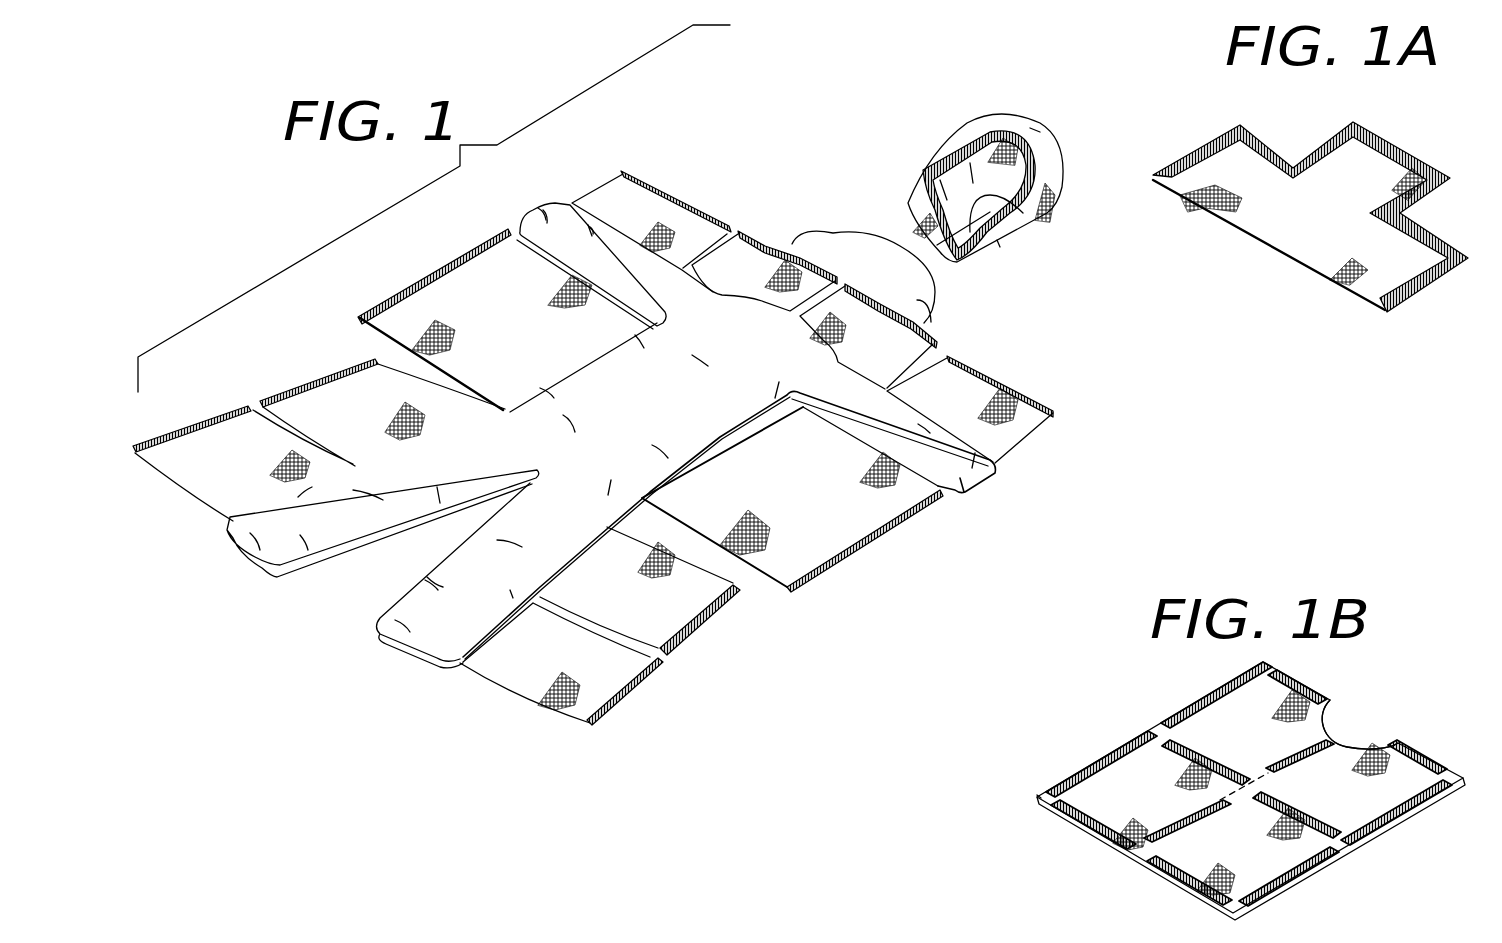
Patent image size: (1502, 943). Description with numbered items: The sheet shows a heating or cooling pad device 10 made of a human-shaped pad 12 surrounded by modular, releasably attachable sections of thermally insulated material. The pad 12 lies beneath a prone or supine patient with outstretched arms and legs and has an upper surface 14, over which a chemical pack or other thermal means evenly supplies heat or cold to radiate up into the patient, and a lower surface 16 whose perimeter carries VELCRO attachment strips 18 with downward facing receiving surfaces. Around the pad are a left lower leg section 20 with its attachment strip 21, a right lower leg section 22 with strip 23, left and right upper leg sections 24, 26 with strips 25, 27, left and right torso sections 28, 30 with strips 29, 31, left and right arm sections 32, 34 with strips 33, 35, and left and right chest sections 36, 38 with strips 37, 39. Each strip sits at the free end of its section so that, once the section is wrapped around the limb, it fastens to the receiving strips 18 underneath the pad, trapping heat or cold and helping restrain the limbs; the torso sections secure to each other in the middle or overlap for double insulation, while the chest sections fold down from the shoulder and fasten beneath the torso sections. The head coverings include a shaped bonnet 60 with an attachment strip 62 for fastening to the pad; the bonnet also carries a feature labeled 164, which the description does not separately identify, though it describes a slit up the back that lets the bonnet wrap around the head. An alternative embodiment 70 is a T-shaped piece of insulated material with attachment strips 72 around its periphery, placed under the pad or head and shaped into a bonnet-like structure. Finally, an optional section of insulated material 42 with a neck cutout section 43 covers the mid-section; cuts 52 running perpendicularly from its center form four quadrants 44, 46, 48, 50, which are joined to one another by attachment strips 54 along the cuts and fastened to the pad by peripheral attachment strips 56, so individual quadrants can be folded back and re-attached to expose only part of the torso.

In FIG. 1, the heating or cooling pad device 10 is at (757, 130).
In FIG. 1, the pad 12 is at (413, 627).
In FIG. 1, the upper surface 14 is at (604, 476).
In FIG. 1, the lower surface 16 is at (268, 582).
In FIG. 1, the attachment strips 18 is at (313, 577).
In FIG. 1, the left lower leg section 20 is at (242, 474).
In FIG. 1, the attachment strip 21 is at (220, 413).
In FIG. 1, the right lower leg section 22 is at (569, 673).
In FIG. 1, the attachment strip 23 is at (643, 683).
In FIG. 1, the left upper leg section 24 is at (374, 429).
In FIG. 1, the attachment strip 25 is at (333, 368).
In FIG. 1, the right upper leg section 26 is at (632, 603).
In FIG. 1, the attachment strip 27 is at (707, 628).
In FIG. 1, the left torso section 28 is at (501, 336).
In FIG. 1, the attachment strip 29 is at (453, 258).
In FIG. 1, the right torso section 30 is at (712, 511).
In FIG. 1, the attachment strip 31 is at (853, 560).
In FIG. 1, the left arm section 32 is at (659, 232).
In FIG. 1, the attachment strip 33 is at (636, 172).
In FIG. 1, the right arm section 34 is at (972, 413).
In FIG. 1, the attachment strip 35 is at (1010, 380).
In FIG. 1, the left chest section 36 is at (759, 288).
In FIG. 1, the attachment strip 37 is at (757, 233).
In FIG. 1, the right chest section 38 is at (881, 361).
In FIG. 1, the attachment strip 39 is at (933, 337).
In FIG. 1, the bonnet 60 is at (1012, 120).
In FIG. 1, the attachment strip 62 is at (927, 165).
In FIG. 1, the hood face opening 164 is at (1017, 213).
In FIG. 1A, the alternative embodiment 70 is at (1237, 175).
In FIG. 1A, the attachment strips 72 is at (1413, 153).
In FIG. 1B, the section of insulated material 42 is at (1433, 747).
In FIG. 1B, the neck cutout section 43 is at (1352, 730).
In FIG. 1B, the quadrant 44 is at (1258, 741).
In FIG. 1B, the quadrant 46 is at (1146, 804).
In FIG. 1B, the quadrant 48 is at (1246, 856).
In FIG. 1B, the quadrant 50 is at (1364, 803).
In FIG. 1B, the cuts 52 is at (1160, 727).
In FIG. 1B, the attachment strips 54 is at (1143, 850).
In FIG. 1B, the attachment strips 56 is at (1058, 818).